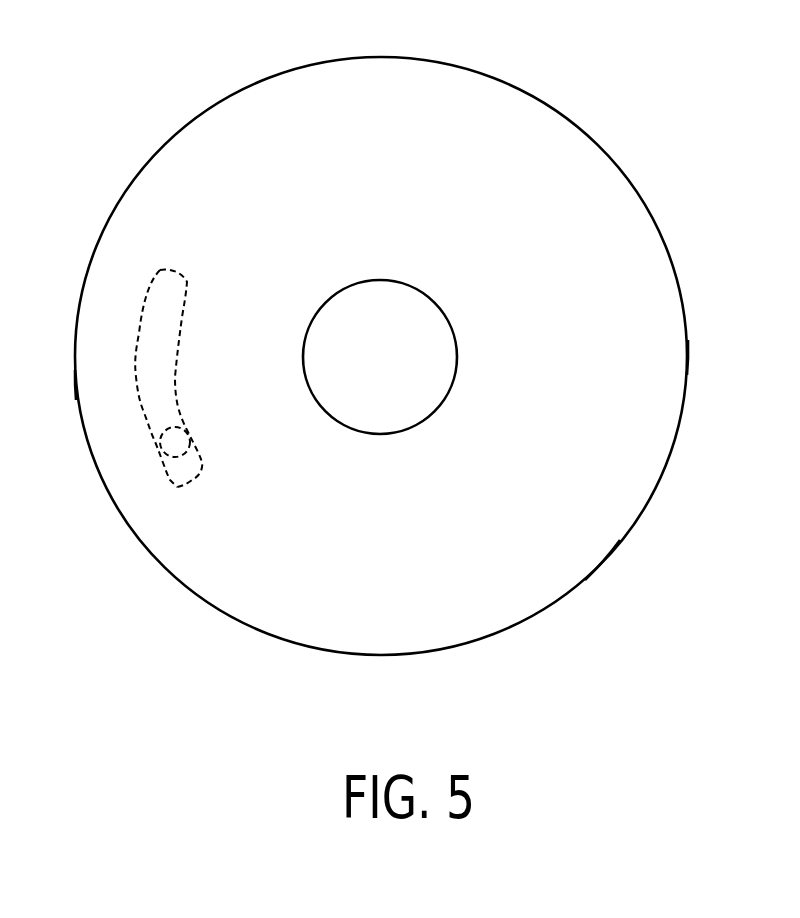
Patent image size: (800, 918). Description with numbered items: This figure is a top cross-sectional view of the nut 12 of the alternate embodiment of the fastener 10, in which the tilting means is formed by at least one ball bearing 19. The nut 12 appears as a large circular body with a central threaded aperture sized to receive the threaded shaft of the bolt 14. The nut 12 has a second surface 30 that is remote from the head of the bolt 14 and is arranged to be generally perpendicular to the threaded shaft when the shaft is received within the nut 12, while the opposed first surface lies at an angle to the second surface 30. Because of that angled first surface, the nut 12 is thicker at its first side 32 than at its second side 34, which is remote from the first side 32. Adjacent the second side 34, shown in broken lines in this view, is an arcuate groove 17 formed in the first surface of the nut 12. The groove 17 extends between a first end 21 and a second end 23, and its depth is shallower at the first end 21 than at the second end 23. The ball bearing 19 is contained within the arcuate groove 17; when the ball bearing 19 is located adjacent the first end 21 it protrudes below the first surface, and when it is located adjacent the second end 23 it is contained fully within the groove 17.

The fastener 10 is at (680, 56).
The nut 12 is at (613, 212).
The bolt 14 is at (348, 308).
The arcuate groove 17 is at (152, 363).
The ball bearing 19 is at (182, 424).
The first end 21 is at (177, 487).
The second end 23 is at (162, 268).
The second surface 30 is at (587, 535).
The first side 32 is at (688, 359).
The second side 34 is at (73, 385).